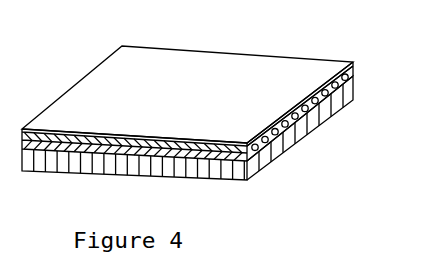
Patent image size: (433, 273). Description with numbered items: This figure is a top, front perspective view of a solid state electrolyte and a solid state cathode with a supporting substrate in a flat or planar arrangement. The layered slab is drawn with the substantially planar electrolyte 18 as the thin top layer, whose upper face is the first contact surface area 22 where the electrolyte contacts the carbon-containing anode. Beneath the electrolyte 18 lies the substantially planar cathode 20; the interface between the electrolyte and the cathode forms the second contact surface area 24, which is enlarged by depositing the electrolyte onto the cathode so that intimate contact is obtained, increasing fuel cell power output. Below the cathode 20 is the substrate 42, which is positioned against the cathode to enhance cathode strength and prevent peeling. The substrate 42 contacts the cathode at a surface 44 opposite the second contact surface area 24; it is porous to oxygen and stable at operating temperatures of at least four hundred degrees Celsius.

The electrolyte 18 is at (355, 63).
The cathode 20 is at (355, 72).
The first contact surface area 22 is at (187, 94).
The second contact surface area 24 is at (162, 156).
The substrate 42 is at (355, 93).
The surface 44 is at (205, 170).